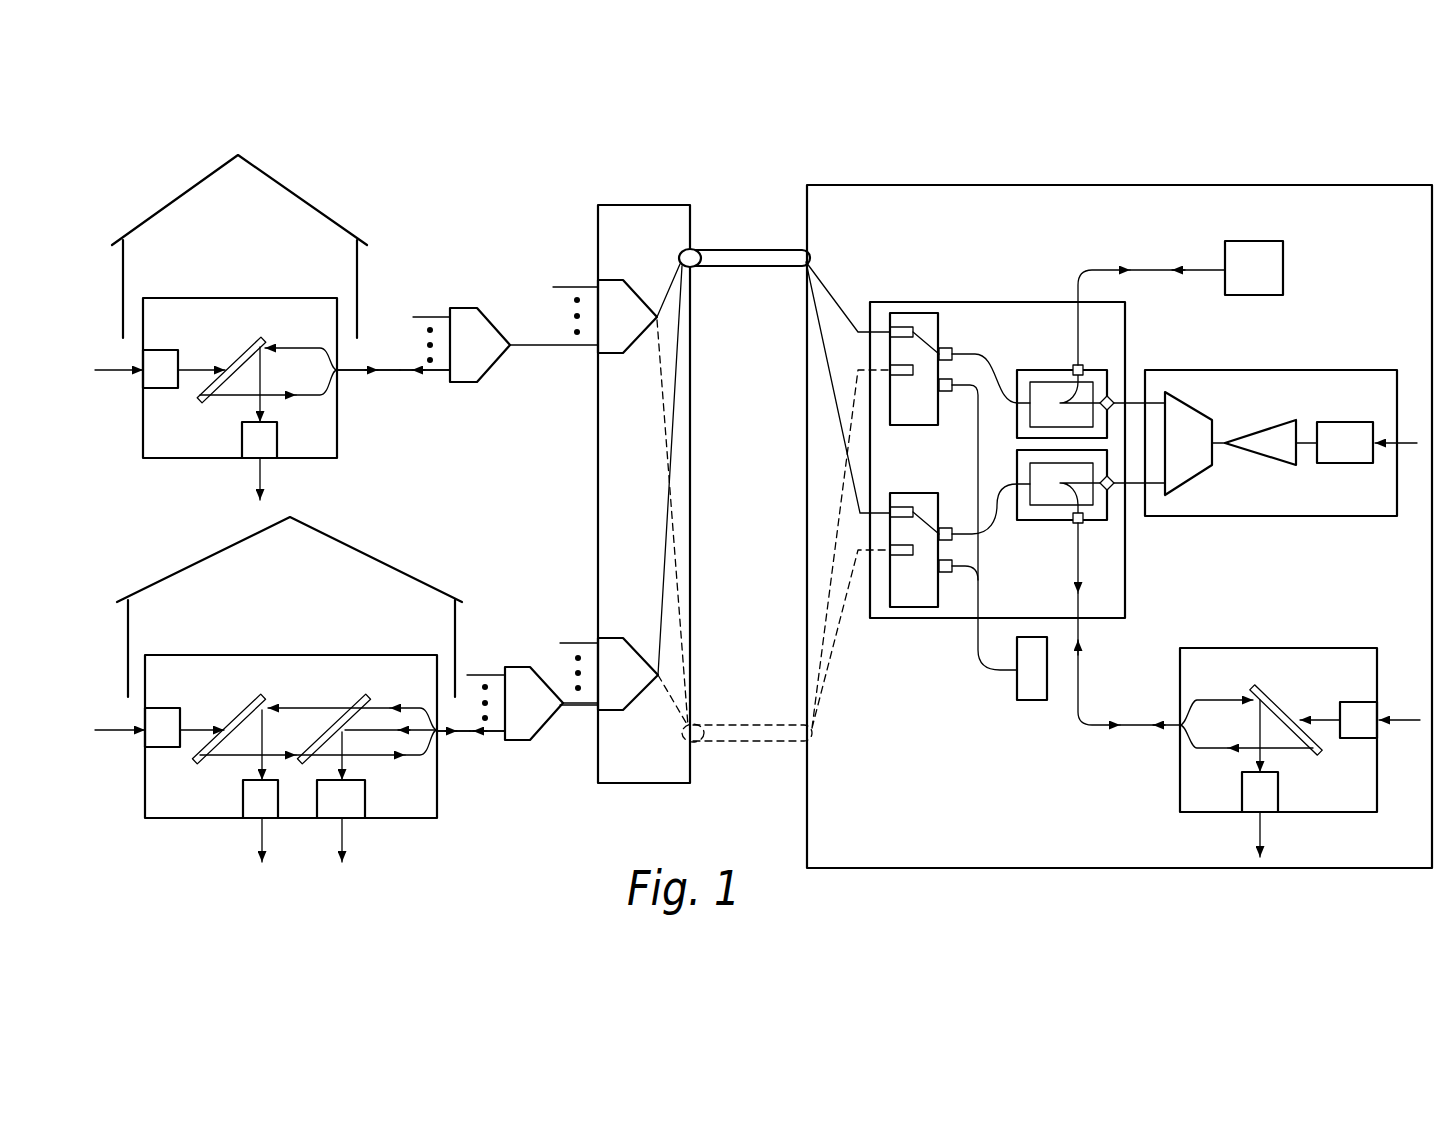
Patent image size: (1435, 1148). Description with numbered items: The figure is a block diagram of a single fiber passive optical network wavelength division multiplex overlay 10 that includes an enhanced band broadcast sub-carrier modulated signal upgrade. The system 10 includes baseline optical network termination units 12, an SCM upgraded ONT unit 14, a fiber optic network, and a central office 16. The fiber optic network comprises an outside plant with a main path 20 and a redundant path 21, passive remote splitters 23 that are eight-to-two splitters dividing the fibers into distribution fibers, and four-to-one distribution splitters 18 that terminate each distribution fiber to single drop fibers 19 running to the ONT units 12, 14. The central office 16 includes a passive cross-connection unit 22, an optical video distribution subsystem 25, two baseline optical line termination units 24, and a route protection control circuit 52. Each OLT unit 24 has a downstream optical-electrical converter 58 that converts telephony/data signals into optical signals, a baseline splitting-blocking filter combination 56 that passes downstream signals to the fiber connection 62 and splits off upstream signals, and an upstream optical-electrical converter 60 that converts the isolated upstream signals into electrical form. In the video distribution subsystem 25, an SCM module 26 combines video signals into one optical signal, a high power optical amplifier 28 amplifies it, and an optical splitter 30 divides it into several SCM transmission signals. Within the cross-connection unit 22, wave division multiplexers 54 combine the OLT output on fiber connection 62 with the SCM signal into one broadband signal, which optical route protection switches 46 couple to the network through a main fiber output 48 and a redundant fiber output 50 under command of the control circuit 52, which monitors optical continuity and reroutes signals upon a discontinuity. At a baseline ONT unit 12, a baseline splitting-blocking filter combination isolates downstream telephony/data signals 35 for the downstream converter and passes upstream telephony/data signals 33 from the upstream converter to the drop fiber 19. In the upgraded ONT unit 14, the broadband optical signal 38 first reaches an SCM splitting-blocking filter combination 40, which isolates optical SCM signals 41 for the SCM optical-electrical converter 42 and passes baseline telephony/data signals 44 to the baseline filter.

The single fiber passive optical network wavelength division multiplex overlay 10 is at (1250, 135).
The baseline optical network termination unit 12 is at (213, 298).
The SCM upgraded ONT unit 14 is at (275, 655).
The central office 16 is at (1025, 185).
The distribution splitter 18 is at (483, 318).
The drop fiber 19 is at (433, 372).
The main path 20 is at (730, 252).
The redundant path 21 is at (747, 741).
The passive cross-connection unit 22 is at (973, 302).
The passive remote splitter 23 is at (638, 292).
The baseline optical line termination unit 24 is at (1284, 273).
The optical video distribution subsystem 25 is at (1318, 370).
The SCM module 26 is at (1339, 465).
The high power optical amplifier 28 is at (1264, 430).
The optical splitter 30 is at (1199, 473).
The upstream telephony/data signals 33 is at (217, 367).
The downstream telephony/data signals 35 is at (263, 378).
The broadband optical signal 38 is at (390, 370).
The SCM splitting-blocking filter combination 40 is at (337, 717).
The optical SCM signals 41 is at (343, 745).
The SCM optical-electrical converter 42 is at (365, 798).
The baseline telephony/data signals 44 is at (330, 706).
The optical route protection switch 46 is at (920, 493).
The main optical fiber output 48 is at (830, 373).
The redundant optical fiber output 50 is at (835, 568).
The route protection control circuit 52 is at (1017, 687).
The wave division multiplexer 54 is at (1040, 370).
The baseline splitting-blocking filter combination 56 is at (1320, 740).
The downstream optical-electrical converter 58 is at (1336, 701).
The upstream optical-electrical converter 60 is at (1280, 790).
The fiber connection 62 is at (1149, 269).